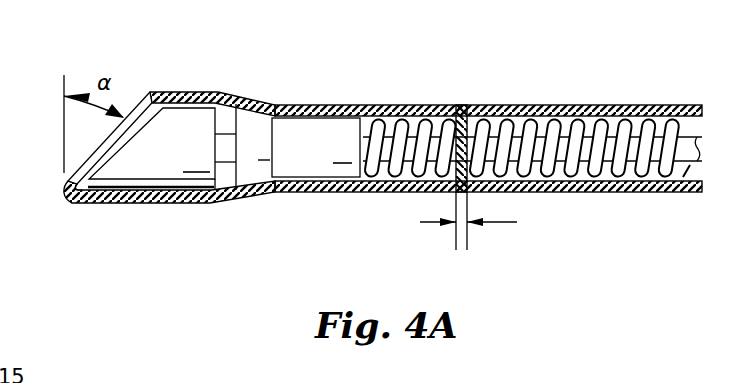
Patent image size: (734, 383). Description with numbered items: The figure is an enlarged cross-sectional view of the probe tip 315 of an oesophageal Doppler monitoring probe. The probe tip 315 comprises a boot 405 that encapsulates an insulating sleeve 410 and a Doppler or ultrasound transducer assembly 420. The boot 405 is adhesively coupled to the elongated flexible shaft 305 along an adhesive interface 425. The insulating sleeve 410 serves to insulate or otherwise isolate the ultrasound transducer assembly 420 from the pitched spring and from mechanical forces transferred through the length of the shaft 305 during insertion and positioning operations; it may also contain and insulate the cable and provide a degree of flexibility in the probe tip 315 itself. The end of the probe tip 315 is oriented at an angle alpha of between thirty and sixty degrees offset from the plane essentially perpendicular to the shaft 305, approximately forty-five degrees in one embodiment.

The shaft 305 is at (620, 105).
The probe tip 315 is at (235, 70).
The boot 405 is at (112, 204).
The insulating sleeve 410 is at (318, 150).
The Doppler or ultrasound transducer assembly 420 is at (168, 152).
The adhesive interface 425 is at (506, 222).